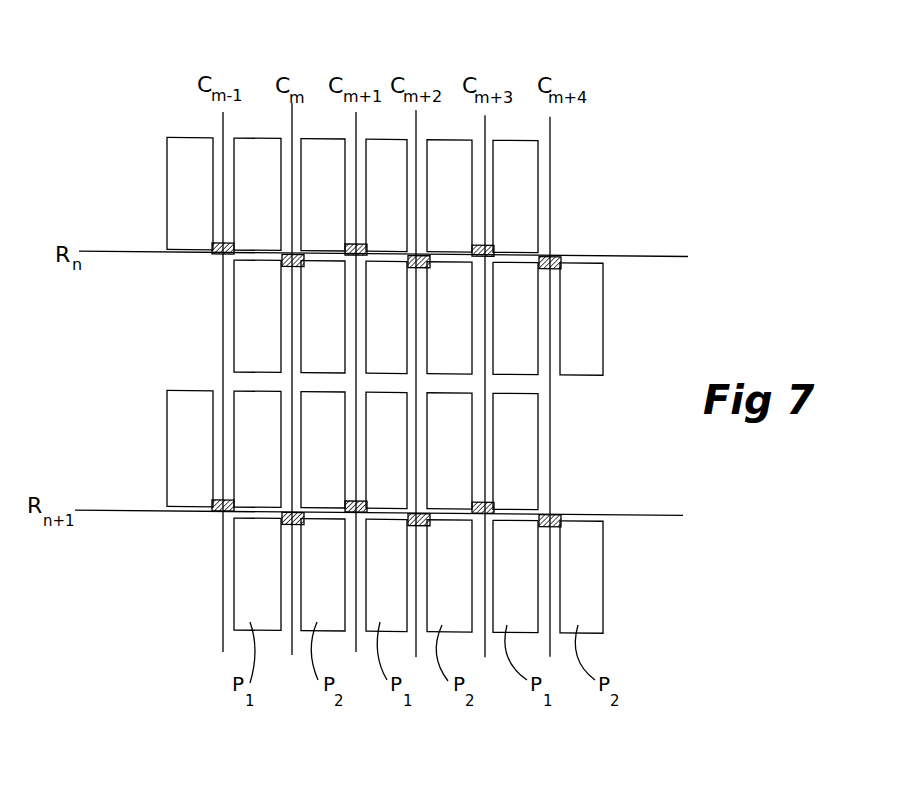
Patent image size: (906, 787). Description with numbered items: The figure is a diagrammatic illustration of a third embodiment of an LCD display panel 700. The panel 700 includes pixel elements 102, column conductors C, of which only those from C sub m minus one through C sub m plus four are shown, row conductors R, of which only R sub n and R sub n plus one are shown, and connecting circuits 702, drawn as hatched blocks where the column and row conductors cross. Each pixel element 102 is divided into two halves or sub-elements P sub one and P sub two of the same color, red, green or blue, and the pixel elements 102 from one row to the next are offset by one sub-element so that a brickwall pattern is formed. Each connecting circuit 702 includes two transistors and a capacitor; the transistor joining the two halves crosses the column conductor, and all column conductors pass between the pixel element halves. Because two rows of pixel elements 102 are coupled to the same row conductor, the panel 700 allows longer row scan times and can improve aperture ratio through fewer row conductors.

The panel 700 is at (381, 333).
The pixel element 102 is at (160, 136).
The connecting circuit 702 is at (213, 253).